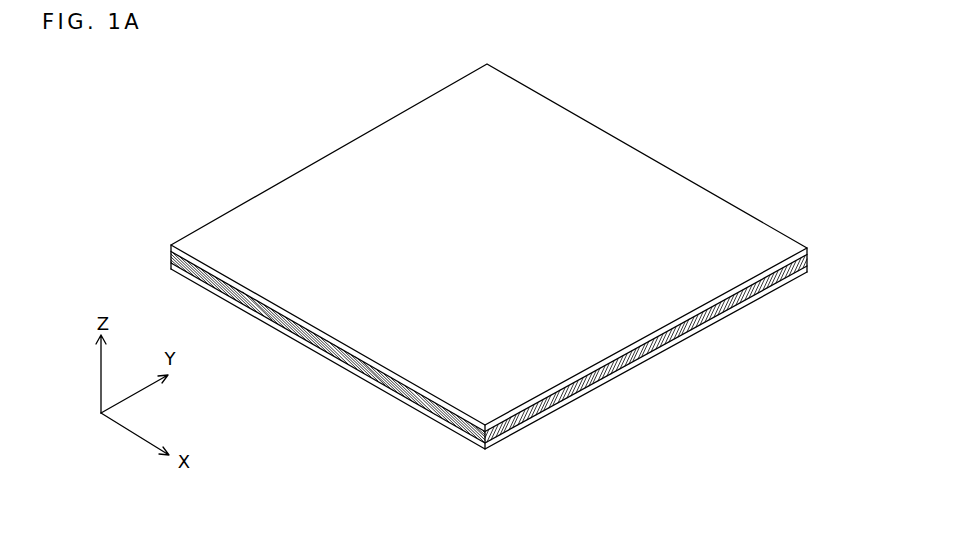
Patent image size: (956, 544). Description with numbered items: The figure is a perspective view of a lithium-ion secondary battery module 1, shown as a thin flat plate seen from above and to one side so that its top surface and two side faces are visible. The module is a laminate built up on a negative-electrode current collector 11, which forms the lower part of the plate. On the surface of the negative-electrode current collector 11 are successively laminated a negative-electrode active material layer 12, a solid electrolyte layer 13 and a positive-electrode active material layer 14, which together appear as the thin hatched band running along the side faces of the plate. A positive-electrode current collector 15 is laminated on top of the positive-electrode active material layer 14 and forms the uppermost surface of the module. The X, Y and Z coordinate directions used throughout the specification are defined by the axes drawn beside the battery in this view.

The lithium-ion secondary battery module 1 is at (311, 118).
The negative-electrode current collector 11 is at (405, 402).
The negative-electrode active material layer 12 is at (608, 372).
The solid electrolyte layer 13 is at (489, 347).
The positive-electrode active material layer 14 is at (489, 347).
The positive-electrode current collector 15 is at (691, 205).